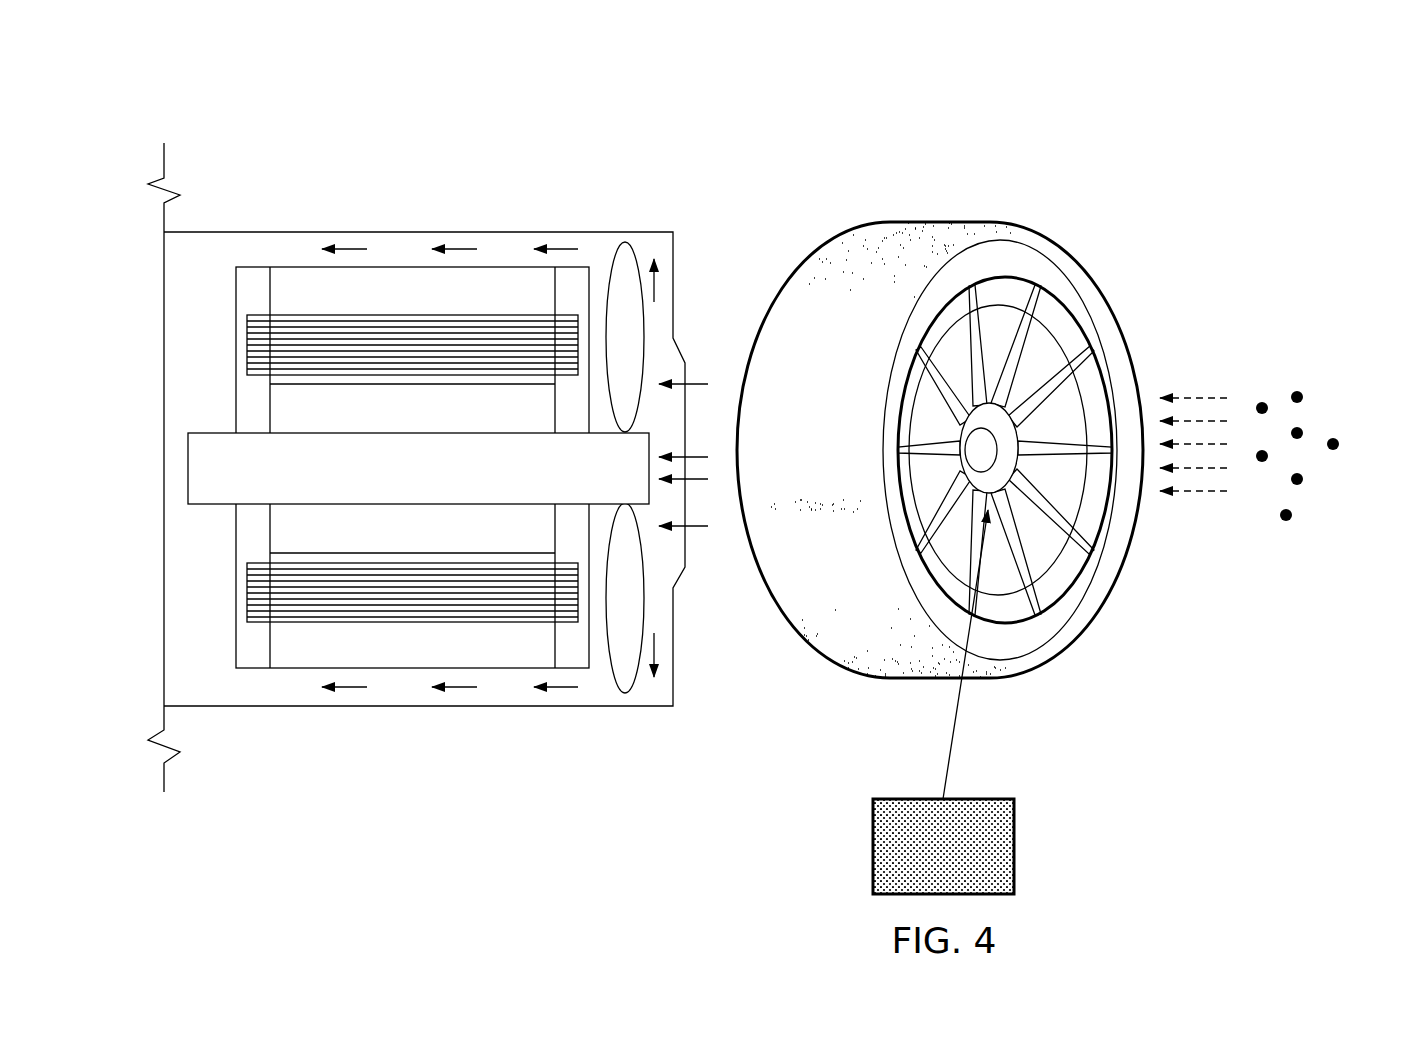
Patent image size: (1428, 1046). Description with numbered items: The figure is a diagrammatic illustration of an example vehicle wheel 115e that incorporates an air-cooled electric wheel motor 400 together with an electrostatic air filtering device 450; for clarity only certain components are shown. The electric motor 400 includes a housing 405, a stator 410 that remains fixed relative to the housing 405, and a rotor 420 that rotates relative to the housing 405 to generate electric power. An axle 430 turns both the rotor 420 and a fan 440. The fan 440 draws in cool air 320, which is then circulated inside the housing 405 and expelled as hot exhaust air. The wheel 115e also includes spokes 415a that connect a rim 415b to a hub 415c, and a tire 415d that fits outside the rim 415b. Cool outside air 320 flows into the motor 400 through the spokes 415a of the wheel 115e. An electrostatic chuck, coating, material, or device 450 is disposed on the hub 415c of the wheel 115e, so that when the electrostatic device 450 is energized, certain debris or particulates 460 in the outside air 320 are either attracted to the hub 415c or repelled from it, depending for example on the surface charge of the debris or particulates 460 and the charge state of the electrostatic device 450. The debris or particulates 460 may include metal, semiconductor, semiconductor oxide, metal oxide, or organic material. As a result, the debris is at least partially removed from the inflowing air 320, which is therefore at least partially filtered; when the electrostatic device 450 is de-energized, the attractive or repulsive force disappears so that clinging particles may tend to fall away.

The electric wheel motor 400 is at (250, 96).
The housing 405 is at (415, 226).
The stator 410 is at (275, 290).
The rotor 420 is at (275, 408).
The axle 430 is at (190, 466).
The fan 440 is at (625, 694).
The cool outside air 320 is at (696, 529).
The spokes 415a is at (1022, 293).
The rim 415b is at (1053, 310).
The hub 415c is at (1058, 593).
The tire 415d is at (863, 661).
The vehicle wheel 115e is at (1128, 677).
The electrostatic air filtering device 450 is at (1014, 845).
The debris or particulates 460 is at (1355, 385).